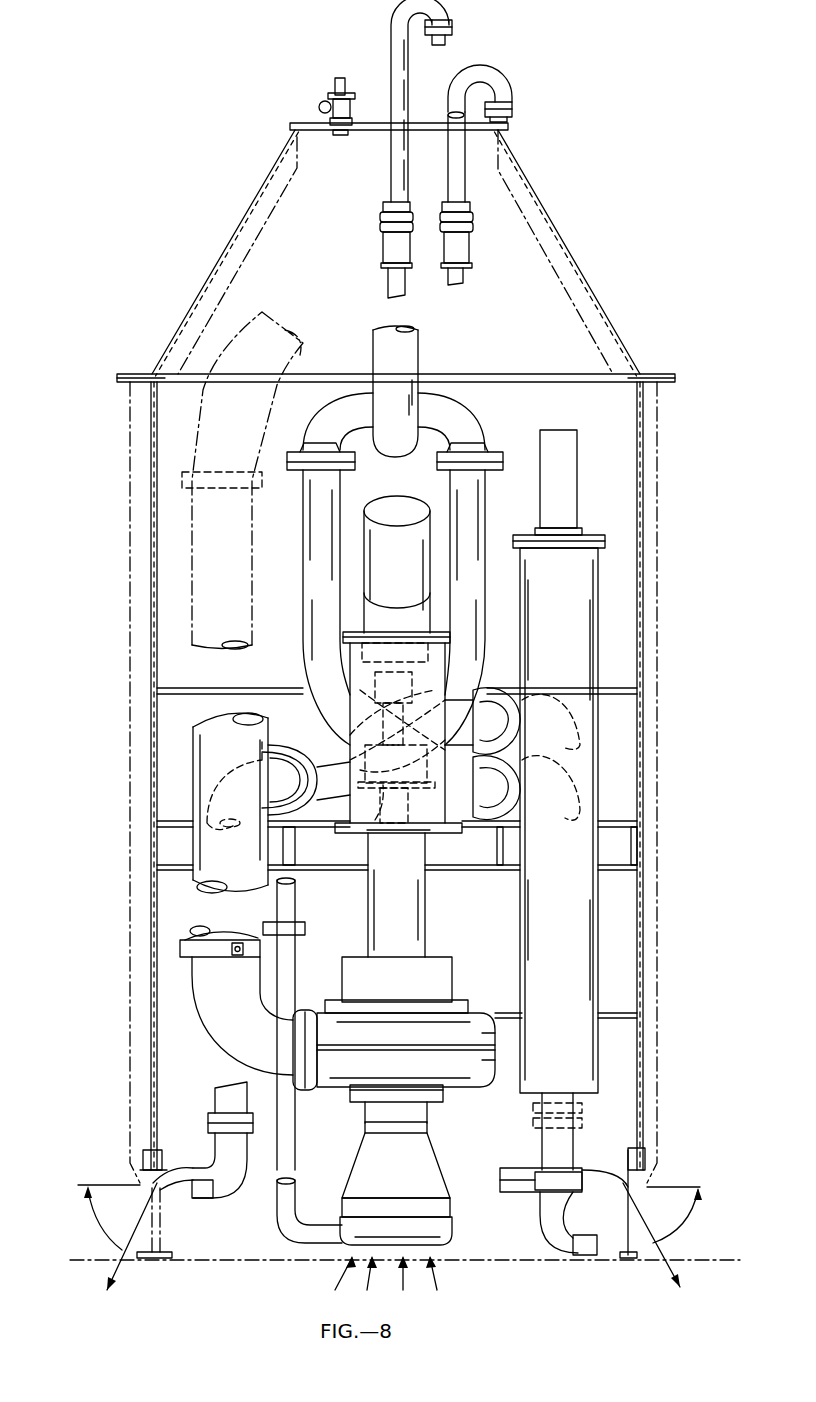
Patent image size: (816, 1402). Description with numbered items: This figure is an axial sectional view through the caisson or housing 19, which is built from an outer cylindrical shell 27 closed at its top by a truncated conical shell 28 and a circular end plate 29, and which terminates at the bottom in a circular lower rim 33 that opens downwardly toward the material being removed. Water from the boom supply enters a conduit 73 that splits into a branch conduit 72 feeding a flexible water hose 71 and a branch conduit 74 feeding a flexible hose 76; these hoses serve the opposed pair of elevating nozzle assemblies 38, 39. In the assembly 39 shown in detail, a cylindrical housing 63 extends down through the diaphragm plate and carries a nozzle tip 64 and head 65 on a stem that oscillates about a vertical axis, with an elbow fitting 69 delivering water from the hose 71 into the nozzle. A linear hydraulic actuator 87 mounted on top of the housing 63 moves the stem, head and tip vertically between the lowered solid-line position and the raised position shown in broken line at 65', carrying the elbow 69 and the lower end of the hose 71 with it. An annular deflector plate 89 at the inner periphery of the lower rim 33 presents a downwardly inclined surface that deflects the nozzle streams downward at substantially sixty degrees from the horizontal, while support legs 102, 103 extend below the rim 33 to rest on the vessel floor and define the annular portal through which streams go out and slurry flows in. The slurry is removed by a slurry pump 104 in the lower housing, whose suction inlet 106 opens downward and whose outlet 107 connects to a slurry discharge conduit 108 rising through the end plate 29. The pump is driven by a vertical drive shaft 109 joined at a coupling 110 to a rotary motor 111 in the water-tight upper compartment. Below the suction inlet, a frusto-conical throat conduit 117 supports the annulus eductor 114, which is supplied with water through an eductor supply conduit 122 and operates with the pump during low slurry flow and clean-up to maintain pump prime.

The caisson or housing 19 is at (190, 270).
The truncated conical shell 28 is at (570, 248).
The outer cylindrical shell 27 is at (643, 672).
The circular end plate 29 is at (415, 118).
The conduit 73 is at (378, 350).
The branch conduit 72 is at (322, 422).
The branch conduit 74 is at (465, 425).
The flexible water hose 71 is at (310, 652).
The flexible hose 76 is at (478, 660).
The rotary motor 111 is at (390, 505).
The vertical drive shaft 109 is at (357, 838).
The coupling 110 is at (345, 733).
The elbow fitting 69 is at (503, 792).
The elevating nozzle assembly 39 is at (611, 1042).
The linear hydraulic actuator 87 is at (567, 488).
The cylindrical housing 63 is at (590, 922).
The raised position of nozzle head 65' is at (535, 1122).
The head 65 is at (537, 1193).
The nozzle tip 64 is at (592, 1240).
The slurry pump 104 is at (352, 1070).
The suction inlet 106 is at (440, 1090).
The frusto-conical throat conduit 117 is at (420, 1160).
The annulus eductor 114 is at (462, 1235).
The slurry discharge conduit 108 is at (222, 1037).
The outlet 107 is at (300, 962).
The eductor supply conduit 122 is at (282, 1230).
The elevating nozzle assembly 38 is at (203, 1097).
The annular deflector plate 89 is at (177, 1170).
The circular lower rim 33 is at (153, 1178).
The support leg 102 is at (127, 1243).
The support leg 103 is at (665, 1262).